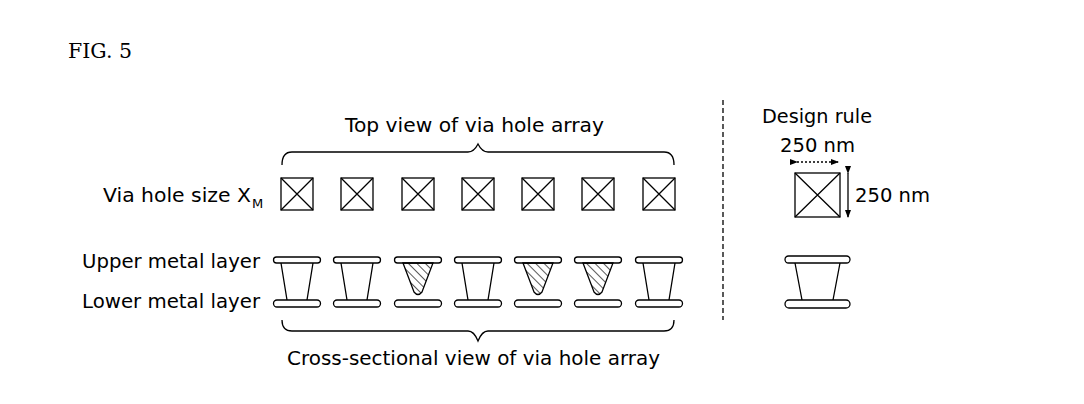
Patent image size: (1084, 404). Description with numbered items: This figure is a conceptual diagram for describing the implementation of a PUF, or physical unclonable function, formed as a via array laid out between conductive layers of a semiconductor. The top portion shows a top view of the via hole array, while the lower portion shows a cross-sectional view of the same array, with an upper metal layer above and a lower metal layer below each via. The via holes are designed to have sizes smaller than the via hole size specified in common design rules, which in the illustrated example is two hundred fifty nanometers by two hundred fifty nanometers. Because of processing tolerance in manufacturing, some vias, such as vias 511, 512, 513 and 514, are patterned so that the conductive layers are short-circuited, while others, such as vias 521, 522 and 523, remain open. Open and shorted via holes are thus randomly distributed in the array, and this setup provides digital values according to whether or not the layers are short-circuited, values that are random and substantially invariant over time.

The first via (normal via hole) 511 is at (295, 255).
The second via (normal via hole) 512 is at (355, 255).
The third via (normal via hole) 513 is at (476, 255).
The fourth via (normal via hole) 514 is at (657, 255).
The first defective via (tapered via hole) 521 is at (416, 255).
The second defective via (tapered via hole) 522 is at (536, 255).
The third defective via (tapered via hole) 523 is at (596, 255).